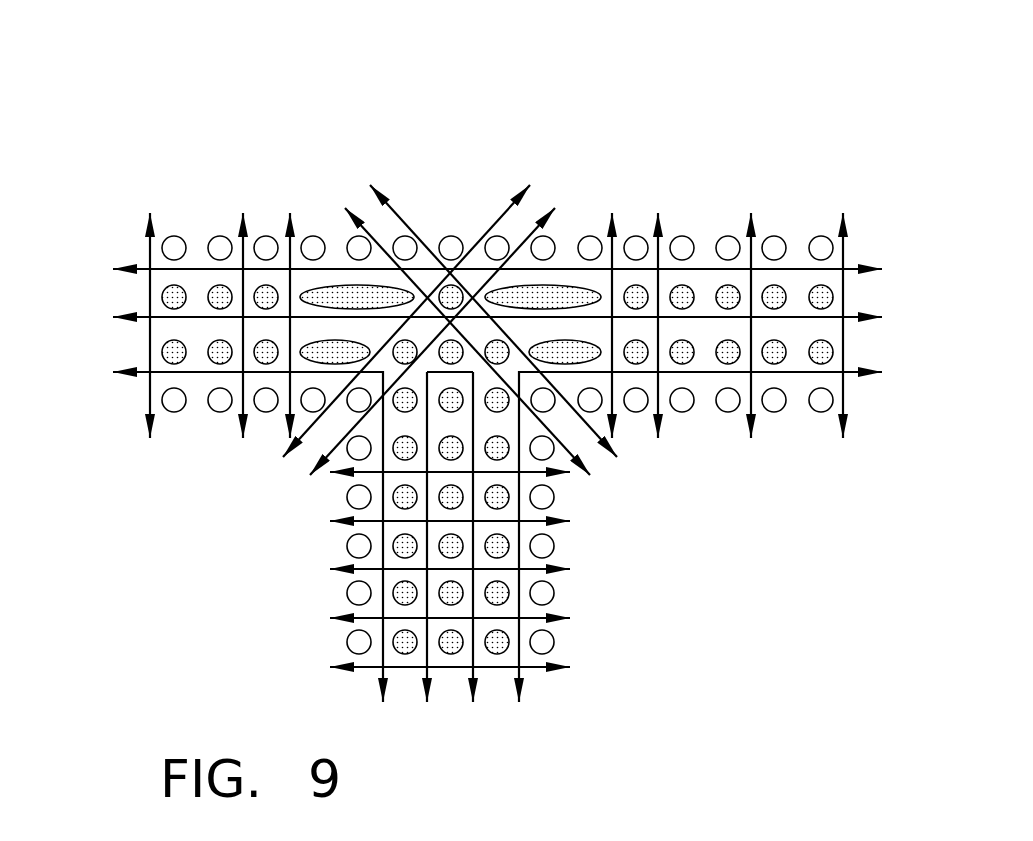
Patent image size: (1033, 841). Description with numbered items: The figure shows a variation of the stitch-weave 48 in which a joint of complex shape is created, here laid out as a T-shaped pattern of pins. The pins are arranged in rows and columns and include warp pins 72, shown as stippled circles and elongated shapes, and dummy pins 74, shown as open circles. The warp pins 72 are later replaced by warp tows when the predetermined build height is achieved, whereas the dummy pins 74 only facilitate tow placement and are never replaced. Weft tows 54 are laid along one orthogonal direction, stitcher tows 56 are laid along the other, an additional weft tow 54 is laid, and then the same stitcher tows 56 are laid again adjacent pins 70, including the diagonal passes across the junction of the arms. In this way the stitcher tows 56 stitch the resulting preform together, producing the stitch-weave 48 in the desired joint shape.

The stitch-weave 48 is at (810, 102).
The weft tows 54 is at (194, 268).
The stitcher tows 56 is at (150, 253).
The pins 70 is at (818, 352).
The warp pins 72 is at (558, 287).
The dummy pins 74 is at (682, 247).